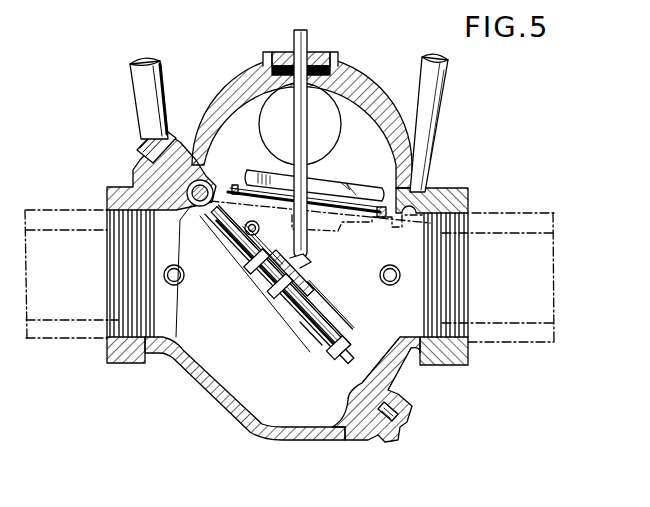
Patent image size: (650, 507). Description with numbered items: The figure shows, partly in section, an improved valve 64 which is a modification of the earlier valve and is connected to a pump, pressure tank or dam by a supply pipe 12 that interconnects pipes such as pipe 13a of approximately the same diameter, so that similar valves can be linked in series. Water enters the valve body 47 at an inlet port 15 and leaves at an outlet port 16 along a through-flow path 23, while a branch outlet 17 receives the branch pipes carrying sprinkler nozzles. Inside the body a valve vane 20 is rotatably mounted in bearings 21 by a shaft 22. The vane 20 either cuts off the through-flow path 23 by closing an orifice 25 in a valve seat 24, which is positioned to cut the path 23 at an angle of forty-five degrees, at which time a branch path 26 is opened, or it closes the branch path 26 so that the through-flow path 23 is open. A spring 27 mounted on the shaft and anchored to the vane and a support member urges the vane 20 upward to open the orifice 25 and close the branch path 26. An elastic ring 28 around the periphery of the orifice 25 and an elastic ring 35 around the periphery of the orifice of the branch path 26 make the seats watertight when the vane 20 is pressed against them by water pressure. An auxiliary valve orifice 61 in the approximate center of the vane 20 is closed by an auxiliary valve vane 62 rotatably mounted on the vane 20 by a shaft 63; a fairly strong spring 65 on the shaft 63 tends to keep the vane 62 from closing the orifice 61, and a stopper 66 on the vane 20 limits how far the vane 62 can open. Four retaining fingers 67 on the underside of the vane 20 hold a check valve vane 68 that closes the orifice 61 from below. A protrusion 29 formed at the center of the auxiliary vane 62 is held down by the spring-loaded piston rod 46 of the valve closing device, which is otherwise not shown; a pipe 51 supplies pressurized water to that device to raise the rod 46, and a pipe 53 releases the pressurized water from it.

The supply pipe 12 is at (510, 340).
The interconnecting pipe 13a is at (60, 338).
The inlet port 15 is at (409, 350).
The outlet port 16 is at (172, 352).
The branch outlet 17 is at (326, 109).
The valve vane 20 is at (342, 334).
The bearings 21 is at (190, 160).
The shaft 22 is at (187, 207).
The through-flow path 23 is at (205, 320).
The valve seat 24 is at (338, 364).
The orifice 25 is at (248, 276).
The branch path 26 is at (261, 176).
The spring 27 is at (186, 258).
The elastic ring 28 is at (318, 346).
The protrusion 29 is at (304, 258).
The elastic ring 35 is at (378, 219).
The piston rod 46 is at (292, 100).
The valve body 47 is at (362, 90).
The pipe 51 is at (437, 82).
The pipe 53 is at (144, 94).
The auxiliary valve orifice 61 is at (276, 300).
The auxiliary valve vane 62 is at (303, 270).
The shaft 63 is at (256, 225).
The valve 64 is at (209, 412).
The spring 65 is at (258, 234).
The stopper 66 is at (318, 292).
The retaining fingers 67 is at (258, 282).
The check valve vane 68 is at (284, 305).